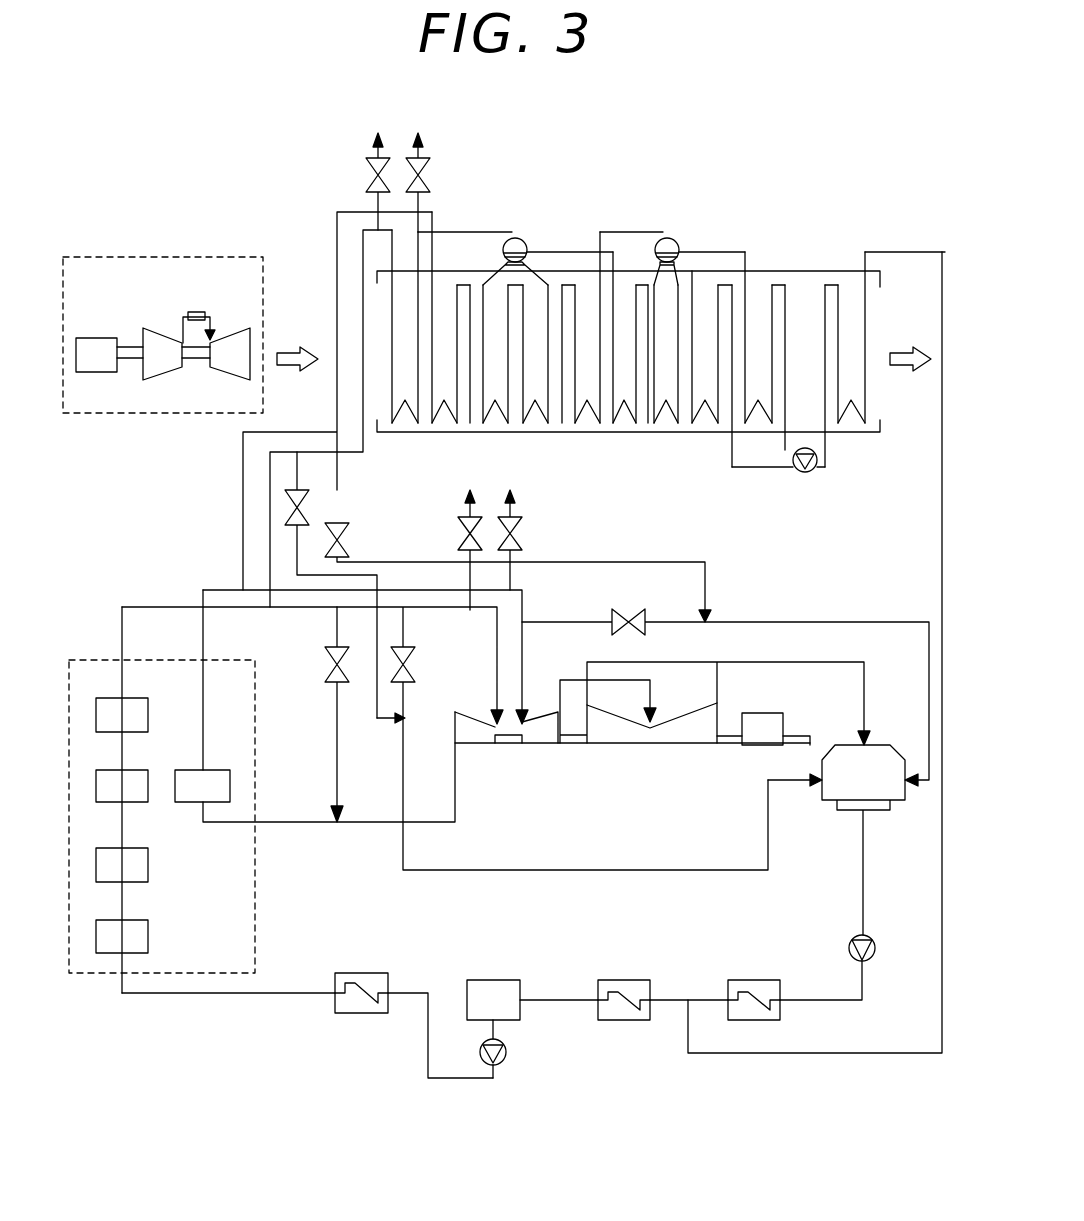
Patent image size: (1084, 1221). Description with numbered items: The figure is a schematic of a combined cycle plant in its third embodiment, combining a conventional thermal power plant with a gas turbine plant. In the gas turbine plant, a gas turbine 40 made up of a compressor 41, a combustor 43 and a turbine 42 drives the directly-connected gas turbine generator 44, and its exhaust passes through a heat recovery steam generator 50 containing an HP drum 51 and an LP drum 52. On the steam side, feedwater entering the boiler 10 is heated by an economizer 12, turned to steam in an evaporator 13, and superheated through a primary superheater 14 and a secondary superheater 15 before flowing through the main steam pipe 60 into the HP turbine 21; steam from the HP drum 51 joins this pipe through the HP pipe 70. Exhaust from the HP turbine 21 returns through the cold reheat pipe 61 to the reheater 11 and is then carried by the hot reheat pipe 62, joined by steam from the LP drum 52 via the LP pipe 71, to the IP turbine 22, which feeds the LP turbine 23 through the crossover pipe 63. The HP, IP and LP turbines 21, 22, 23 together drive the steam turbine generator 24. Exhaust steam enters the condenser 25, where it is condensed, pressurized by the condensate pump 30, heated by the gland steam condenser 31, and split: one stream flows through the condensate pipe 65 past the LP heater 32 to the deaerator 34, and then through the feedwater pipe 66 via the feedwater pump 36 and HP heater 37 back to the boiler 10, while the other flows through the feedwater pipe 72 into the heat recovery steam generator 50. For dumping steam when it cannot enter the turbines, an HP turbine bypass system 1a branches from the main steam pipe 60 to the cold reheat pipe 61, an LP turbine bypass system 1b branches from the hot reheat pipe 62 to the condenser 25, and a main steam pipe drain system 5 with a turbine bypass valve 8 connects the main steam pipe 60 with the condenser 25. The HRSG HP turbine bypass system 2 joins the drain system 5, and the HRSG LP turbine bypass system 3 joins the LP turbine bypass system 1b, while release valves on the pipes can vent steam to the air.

The HP turbine bypass system 1a is at (336, 750).
The LP turbine bypass system 1b is at (841, 620).
The HRSG HP turbine bypass system 2 is at (299, 471).
The HRSG LP turbine bypass system 3 is at (338, 492).
The main steam pipe drain system 5 is at (535, 870).
The turbine bypass valve 8 is at (322, 664).
The boiler 10 is at (166, 781).
The reheater 11 is at (192, 804).
The economizer 12 is at (96, 930).
The evaporator 13 is at (96, 855).
The primary superheater 14 is at (96, 780).
The secondary superheater 15 is at (96, 706).
The HP turbine 21 is at (481, 746).
The IP turbine 22 is at (539, 746).
The LP turbine 23 is at (658, 746).
The steam turbine generator 24 is at (775, 713).
The condenser 25 is at (893, 743).
The condensate pump 30 is at (876, 943).
The gland steam condenser 31 is at (761, 980).
The LP heater 32 is at (634, 980).
The deaerator 34 is at (494, 980).
The feedwater pump 36 is at (502, 1063).
The HP heater 37 is at (367, 973).
The gas turbine 40 is at (163, 310).
The compressor 41 is at (140, 382).
The turbine 42 is at (240, 329).
The combustor 43 is at (200, 310).
The gas turbine generator 44 is at (102, 336).
The heat recovery steam generator 50 is at (661, 329).
The HP drum 51 is at (528, 237).
The LP drum 52 is at (680, 237).
The main steam pipe 60 is at (442, 612).
The cold reheat pipe 61 is at (458, 822).
The hot reheat pipe 62 is at (528, 590).
The crossover pipe 63 is at (560, 683).
The condensate pipe 65 is at (562, 1000).
The feedwater pipe 66 is at (190, 994).
The HP pipe 70 is at (368, 454).
The LP pipe 71 is at (336, 411).
The feedwater pipe 72 is at (806, 1053).